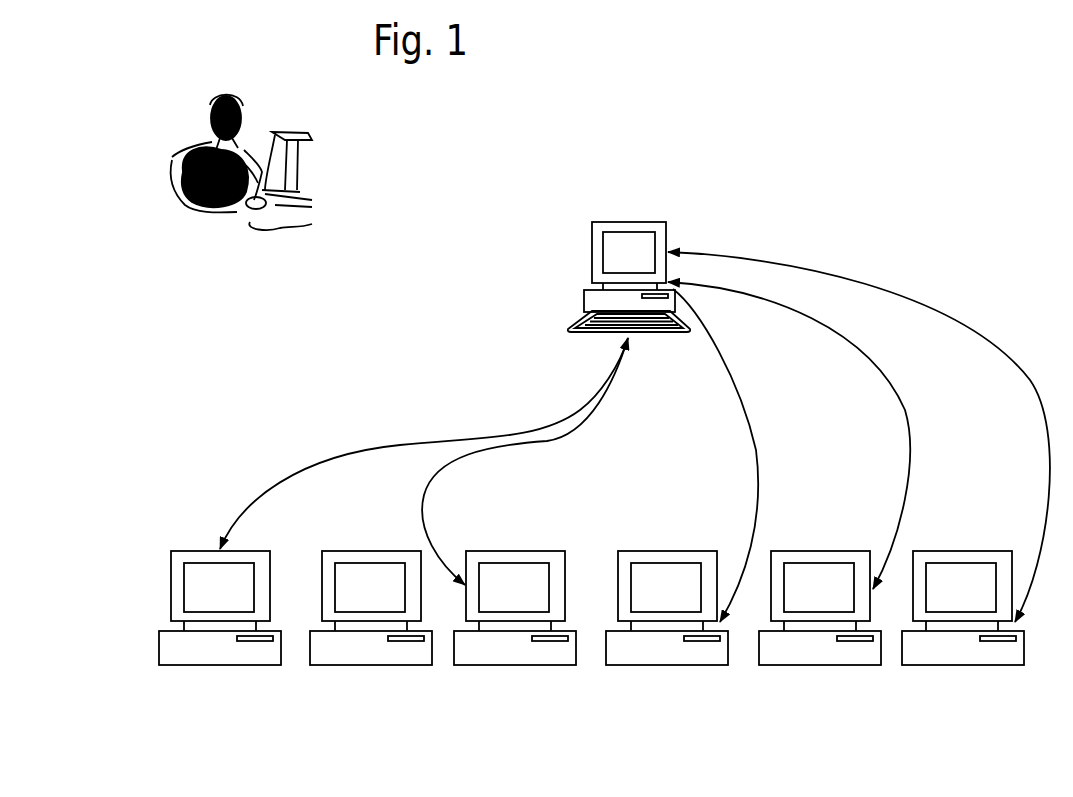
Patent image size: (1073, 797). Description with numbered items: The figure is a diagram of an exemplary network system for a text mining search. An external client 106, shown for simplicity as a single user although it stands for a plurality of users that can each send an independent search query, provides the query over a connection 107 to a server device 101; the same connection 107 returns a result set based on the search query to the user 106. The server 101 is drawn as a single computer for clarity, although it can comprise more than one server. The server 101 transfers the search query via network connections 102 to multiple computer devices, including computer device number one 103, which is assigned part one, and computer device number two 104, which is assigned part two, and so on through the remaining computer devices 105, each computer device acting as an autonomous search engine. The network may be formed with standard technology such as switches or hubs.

The server device 101 is at (629, 248).
The network connections 102 is at (321, 620).
The computer device #1 103 is at (220, 634).
The computer device #2 104 is at (371, 634).
The other client computers 105 is at (963, 667).
The external client 106 is at (241, 192).
The connection 107 is at (313, 163).